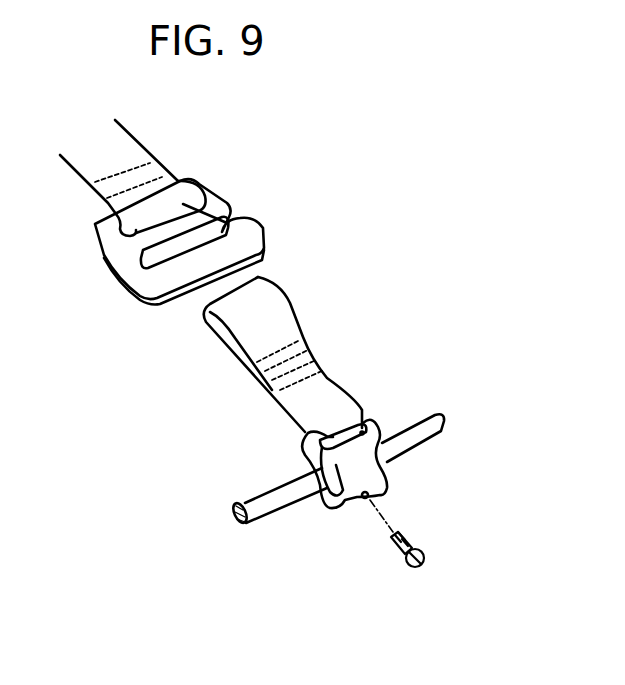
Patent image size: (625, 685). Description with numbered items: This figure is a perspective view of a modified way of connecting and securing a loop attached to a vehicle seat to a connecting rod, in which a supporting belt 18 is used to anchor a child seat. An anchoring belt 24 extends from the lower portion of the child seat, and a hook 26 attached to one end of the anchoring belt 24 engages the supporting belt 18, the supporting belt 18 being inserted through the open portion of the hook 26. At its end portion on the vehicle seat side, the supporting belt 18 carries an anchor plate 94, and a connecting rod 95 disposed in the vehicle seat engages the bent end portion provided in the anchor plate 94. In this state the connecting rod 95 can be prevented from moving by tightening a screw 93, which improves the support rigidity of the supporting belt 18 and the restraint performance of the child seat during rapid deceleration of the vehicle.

The anchoring belt 24 is at (128, 148).
The hook 26 is at (252, 237).
The supporting belt 18 is at (293, 303).
The connecting rod 95 is at (418, 422).
The anchor plate 94 is at (385, 480).
The screw 93 is at (425, 565).